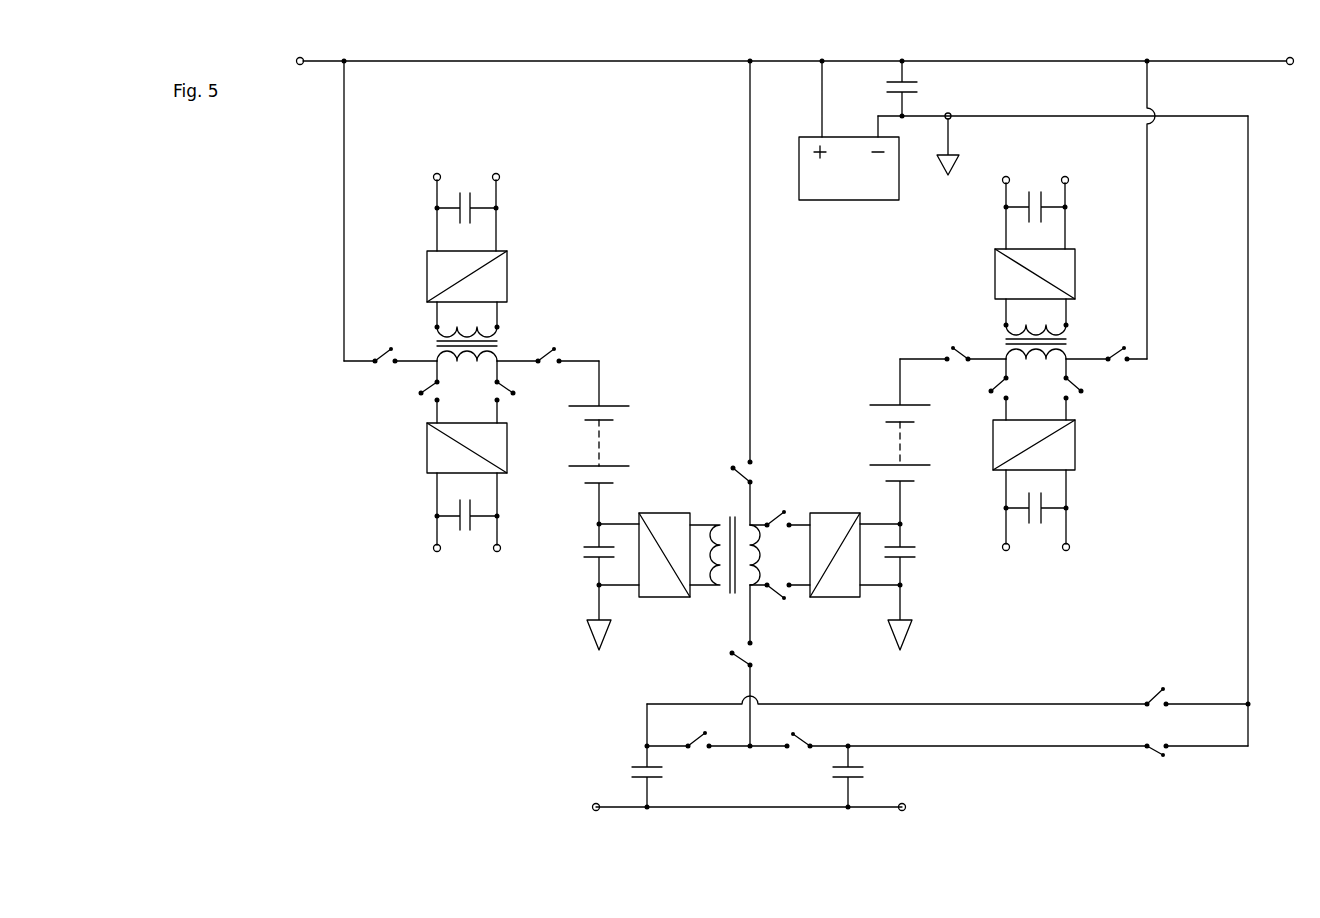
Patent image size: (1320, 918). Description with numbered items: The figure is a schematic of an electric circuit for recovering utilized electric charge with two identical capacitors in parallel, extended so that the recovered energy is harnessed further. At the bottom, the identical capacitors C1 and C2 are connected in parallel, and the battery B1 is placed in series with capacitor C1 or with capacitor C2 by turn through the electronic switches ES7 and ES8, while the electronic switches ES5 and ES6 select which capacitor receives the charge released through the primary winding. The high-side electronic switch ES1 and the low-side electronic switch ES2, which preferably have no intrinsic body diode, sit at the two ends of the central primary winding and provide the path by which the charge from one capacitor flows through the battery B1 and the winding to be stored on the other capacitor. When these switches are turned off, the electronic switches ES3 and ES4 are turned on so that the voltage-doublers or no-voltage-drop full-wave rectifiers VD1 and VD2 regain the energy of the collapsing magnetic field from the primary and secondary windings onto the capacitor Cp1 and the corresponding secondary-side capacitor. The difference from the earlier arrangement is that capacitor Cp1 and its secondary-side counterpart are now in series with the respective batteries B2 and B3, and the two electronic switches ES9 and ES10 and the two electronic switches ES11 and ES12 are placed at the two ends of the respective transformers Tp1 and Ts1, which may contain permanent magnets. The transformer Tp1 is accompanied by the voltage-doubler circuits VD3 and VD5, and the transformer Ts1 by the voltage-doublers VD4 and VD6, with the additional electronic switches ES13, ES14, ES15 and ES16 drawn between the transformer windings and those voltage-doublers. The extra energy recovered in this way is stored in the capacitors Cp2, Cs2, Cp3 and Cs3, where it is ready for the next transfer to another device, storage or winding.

The battery B1 is at (858, 130).
The battery B2 is at (888, 441).
The battery B3 is at (611, 442).
The capacitor C1 is at (624, 777).
The capacitor C2 is at (866, 777).
The capacitor Cs2 is at (1036, 207).
The capacitor Cs3 is at (467, 207).
The capacitor Cp1 is at (920, 586).
The capacitor Cp2 is at (1036, 525).
The capacitor Cp3 is at (467, 522).
The voltage-doubler VD1 is at (855, 544).
The voltage-doubler VD2 is at (637, 570).
The voltage-doubler circuit VD3 is at (1014, 274).
The voltage-doubler VD4 is at (490, 276).
The voltage-doubler circuit VD5 is at (1061, 445).
The voltage-doubler VD6 is at (435, 448).
The transformer Ts1 is at (508, 331).
The transformer Tp1 is at (1081, 312).
The electronic switch ES1 is at (764, 492).
The electronic switch ES2 is at (763, 665).
The electronic switch ES3 is at (780, 510).
The electronic switch ES4 is at (780, 602).
The electronic switch ES5 is at (698, 754).
The electronic switch ES6 is at (799, 755).
The electronic switch ES7 is at (1188, 685).
The electronic switch ES8 is at (1048, 765).
The electronic switch ES9 is at (953, 343).
The electronic switch ES10 is at (1106, 343).
The electronic switch ES11 is at (552, 351).
The electronic switch ES12 is at (390, 346).
The electronic switch ES13 is at (978, 399).
The electronic switch ES14 is at (1098, 399).
The electronic switch ES15 is at (399, 402).
The electronic switch ES16 is at (529, 401).